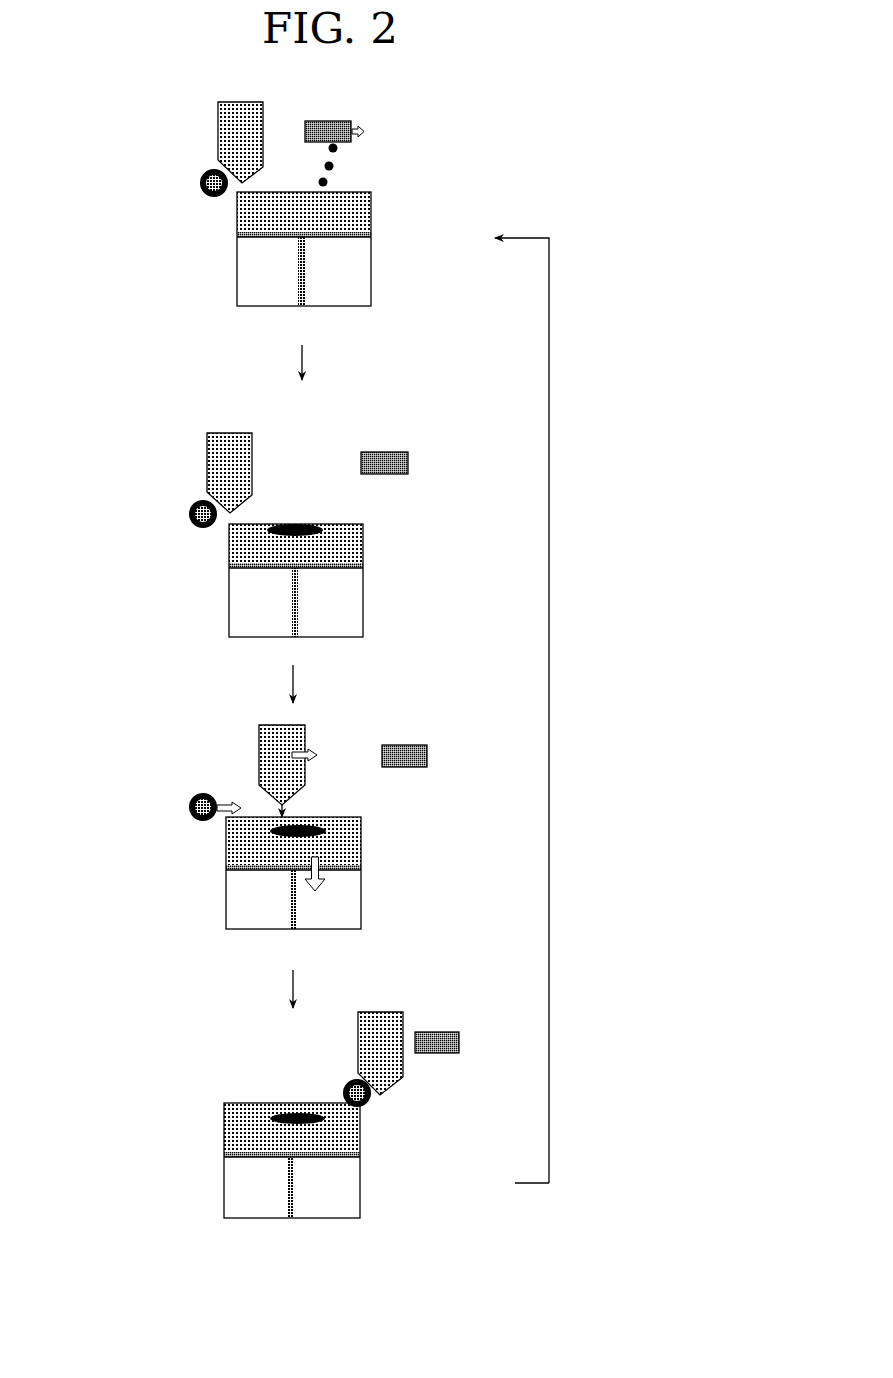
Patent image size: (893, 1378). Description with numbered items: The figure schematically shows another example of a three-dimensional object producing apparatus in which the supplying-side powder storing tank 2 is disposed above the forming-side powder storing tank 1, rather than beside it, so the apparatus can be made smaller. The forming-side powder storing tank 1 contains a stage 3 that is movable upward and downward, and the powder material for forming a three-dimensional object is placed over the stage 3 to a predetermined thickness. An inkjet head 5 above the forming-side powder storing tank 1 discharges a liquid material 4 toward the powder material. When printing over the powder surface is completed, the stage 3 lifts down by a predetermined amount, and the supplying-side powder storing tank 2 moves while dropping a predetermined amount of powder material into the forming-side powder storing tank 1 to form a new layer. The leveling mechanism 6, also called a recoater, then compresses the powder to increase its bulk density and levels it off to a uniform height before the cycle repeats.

The forming-side powder storing tank 1 is at (362, 210).
The supplying-side powder storing tank 2 is at (222, 125).
The stage 3 is at (300, 238).
The liquid material 4 is at (338, 168).
The inkjet head 5 is at (326, 122).
The leveling mechanism 6 is at (204, 190).